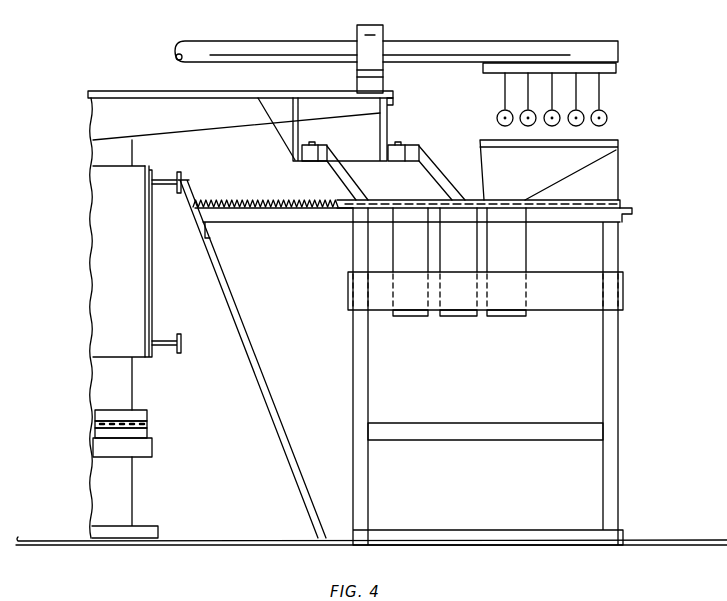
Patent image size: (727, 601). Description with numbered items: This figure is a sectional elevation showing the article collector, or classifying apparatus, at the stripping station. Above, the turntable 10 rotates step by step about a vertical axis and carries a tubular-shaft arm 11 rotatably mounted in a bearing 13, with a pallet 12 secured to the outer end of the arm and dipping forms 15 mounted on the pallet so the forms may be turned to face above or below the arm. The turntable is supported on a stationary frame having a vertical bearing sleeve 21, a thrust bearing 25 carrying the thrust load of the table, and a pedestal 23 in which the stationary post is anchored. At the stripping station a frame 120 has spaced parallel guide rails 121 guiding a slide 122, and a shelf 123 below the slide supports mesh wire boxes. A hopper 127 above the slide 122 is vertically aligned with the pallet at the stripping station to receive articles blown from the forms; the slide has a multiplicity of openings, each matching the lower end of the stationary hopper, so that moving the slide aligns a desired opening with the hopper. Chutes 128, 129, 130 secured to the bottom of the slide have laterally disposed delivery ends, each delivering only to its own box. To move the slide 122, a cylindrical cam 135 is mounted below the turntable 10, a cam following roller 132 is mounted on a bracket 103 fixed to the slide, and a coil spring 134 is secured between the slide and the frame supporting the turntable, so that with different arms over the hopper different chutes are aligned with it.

The turntable 10 is at (258, 92).
The arm 11 is at (470, 28).
The pallet 12 is at (553, 68).
The bearing 13 is at (378, 35).
The dipping form 15 is at (497, 117).
The vertical bearing sleeve 21 is at (140, 292).
The pedestal 23 is at (125, 496).
The thrust bearing 25 is at (150, 414).
The bracket 103 is at (370, 183).
The frame 120 is at (620, 358).
The guide rail 121 is at (512, 198).
The slide 122 is at (621, 192).
The shelf 123 is at (521, 424).
The hopper 127 is at (616, 139).
The chute 128 is at (397, 243).
The chute 129 is at (455, 262).
The chute 130 is at (518, 258).
The cam following roller 132 is at (320, 147).
The coil spring 134 is at (268, 186).
The cylindrical cam 135 is at (300, 130).